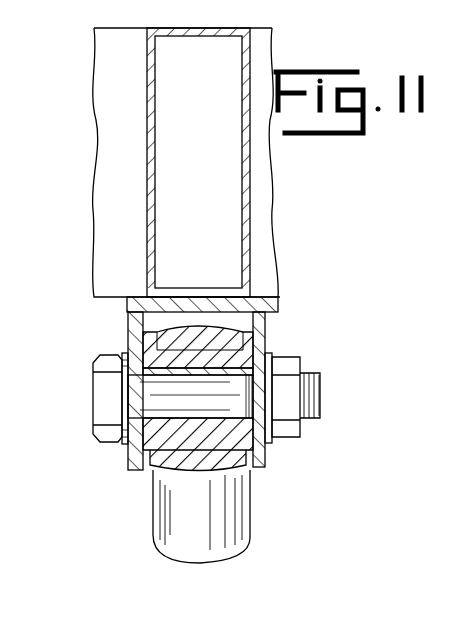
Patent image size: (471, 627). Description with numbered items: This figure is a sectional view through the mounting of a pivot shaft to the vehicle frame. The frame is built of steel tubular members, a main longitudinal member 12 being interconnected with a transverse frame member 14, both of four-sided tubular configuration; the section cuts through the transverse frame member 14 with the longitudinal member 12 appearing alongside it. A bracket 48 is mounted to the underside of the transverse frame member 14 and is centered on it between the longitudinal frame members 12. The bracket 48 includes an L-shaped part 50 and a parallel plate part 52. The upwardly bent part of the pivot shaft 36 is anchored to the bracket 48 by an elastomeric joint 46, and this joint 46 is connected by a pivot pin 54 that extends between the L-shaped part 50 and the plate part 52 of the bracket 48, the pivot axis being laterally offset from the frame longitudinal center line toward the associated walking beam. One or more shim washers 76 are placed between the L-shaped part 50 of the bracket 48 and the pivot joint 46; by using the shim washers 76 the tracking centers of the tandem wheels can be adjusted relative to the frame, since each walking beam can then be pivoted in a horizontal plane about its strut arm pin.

The main longitudinal member 12 is at (93, 198).
The transverse frame member 14 is at (262, 175).
The pivot shaft 36 is at (250, 515).
The elastomeric joint 46 is at (171, 470).
The bracket 48 is at (127, 462).
The L-shaped part 50 is at (127, 325).
The plate part 52 is at (268, 330).
The pivot pin 54 is at (132, 397).
The shim washer 76 is at (143, 345).